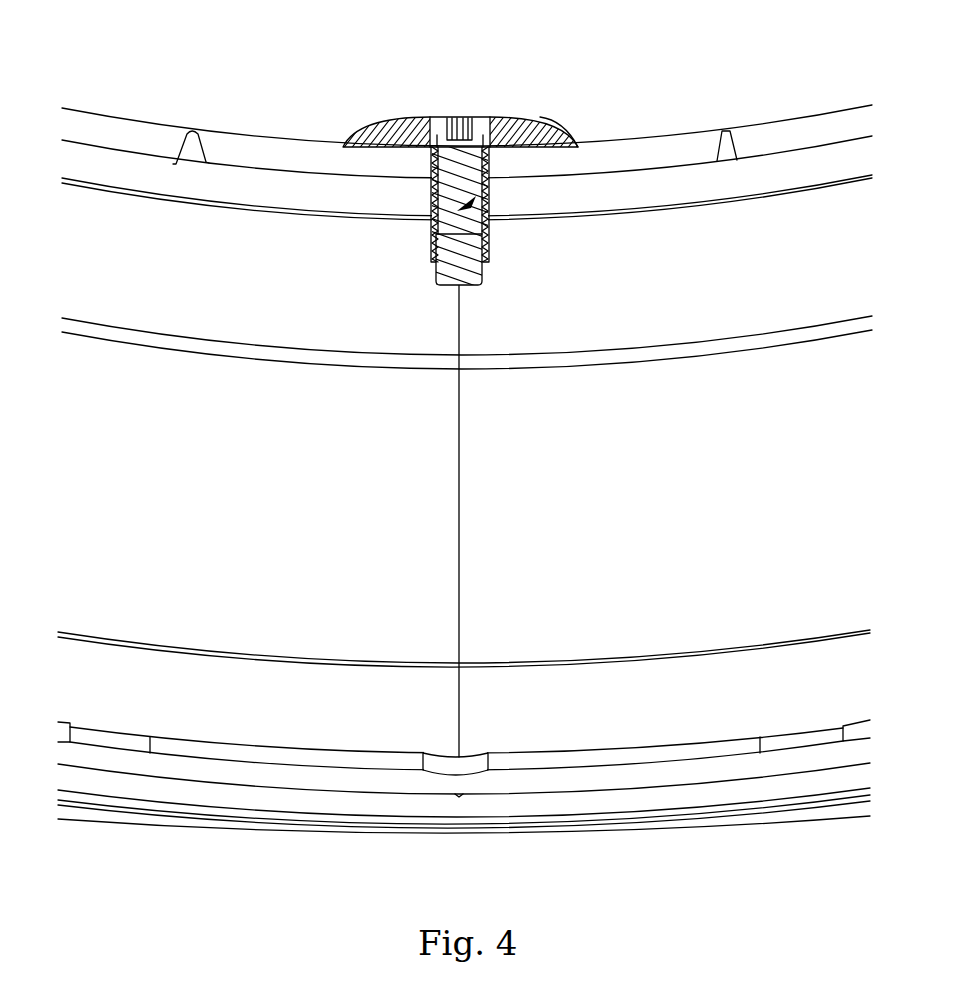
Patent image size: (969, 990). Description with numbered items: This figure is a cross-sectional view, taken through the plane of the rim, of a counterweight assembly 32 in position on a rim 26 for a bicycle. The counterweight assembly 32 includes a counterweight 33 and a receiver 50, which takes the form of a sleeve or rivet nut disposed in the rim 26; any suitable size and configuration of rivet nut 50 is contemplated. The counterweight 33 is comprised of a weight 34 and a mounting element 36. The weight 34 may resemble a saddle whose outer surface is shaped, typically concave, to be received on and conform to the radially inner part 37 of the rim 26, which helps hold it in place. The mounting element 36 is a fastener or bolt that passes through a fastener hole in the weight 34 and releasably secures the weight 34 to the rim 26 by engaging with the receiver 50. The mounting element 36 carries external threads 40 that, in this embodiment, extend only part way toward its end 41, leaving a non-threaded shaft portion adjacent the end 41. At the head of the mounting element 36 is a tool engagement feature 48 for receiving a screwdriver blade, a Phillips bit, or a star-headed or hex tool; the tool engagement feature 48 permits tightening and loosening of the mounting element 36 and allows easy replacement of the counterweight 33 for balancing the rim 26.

The rim 26 is at (268, 733).
The counterweight assembly 32 is at (560, 239).
The counterweight 33 is at (406, 110).
The weight 34 is at (515, 128).
The mounting element 36 is at (492, 202).
The radially inner part 37 is at (743, 128).
The external threads 40 is at (447, 218).
The end 41 is at (482, 283).
The tool engagement feature 48 is at (463, 105).
The receiver 50 is at (432, 192).